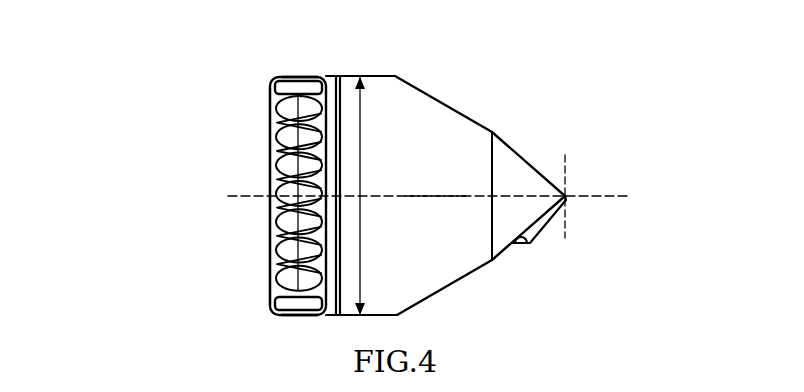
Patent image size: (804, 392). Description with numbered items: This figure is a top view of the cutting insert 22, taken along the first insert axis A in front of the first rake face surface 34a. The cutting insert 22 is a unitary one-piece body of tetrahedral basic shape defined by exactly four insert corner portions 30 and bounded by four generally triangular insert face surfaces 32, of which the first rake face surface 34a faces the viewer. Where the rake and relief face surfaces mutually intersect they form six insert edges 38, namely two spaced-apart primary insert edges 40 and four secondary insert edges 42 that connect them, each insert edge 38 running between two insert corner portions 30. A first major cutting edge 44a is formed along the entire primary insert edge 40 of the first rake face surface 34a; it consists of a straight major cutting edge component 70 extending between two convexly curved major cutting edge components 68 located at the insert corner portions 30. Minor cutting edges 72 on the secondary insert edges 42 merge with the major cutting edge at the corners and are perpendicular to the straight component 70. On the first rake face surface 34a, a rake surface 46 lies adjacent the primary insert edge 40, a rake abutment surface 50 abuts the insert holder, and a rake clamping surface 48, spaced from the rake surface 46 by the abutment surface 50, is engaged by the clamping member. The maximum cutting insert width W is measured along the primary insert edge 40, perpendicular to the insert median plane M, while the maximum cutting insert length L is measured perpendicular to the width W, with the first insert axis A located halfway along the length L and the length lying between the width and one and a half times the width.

The cutting insert 22 is at (497, 166).
The insert corner portion 30 is at (277, 72).
The insert face surface 32 is at (497, 166).
The first rake face surface 34a is at (567, 63).
The insert edge 38 is at (323, 208).
The secondary insert edge 42 is at (430, 92).
The primary insert edge 40 is at (170, 196).
The first major cutting edge 44a is at (273, 170).
The rake surface 46 is at (270, 135).
The rake clamping surface 48 is at (482, 223).
The rake abutment surface 50 is at (420, 242).
The convexly curved major cutting edge component 68 is at (277, 88).
The straight major cutting edge component 70 is at (263, 238).
The minor cutting edge 72 is at (308, 77).
The maximum cutting insert width W is at (368, 100).
The maximum cutting insert length L is at (522, 195).
The first insert axis A is at (417, 195).
The insert median plane M is at (440, 197).